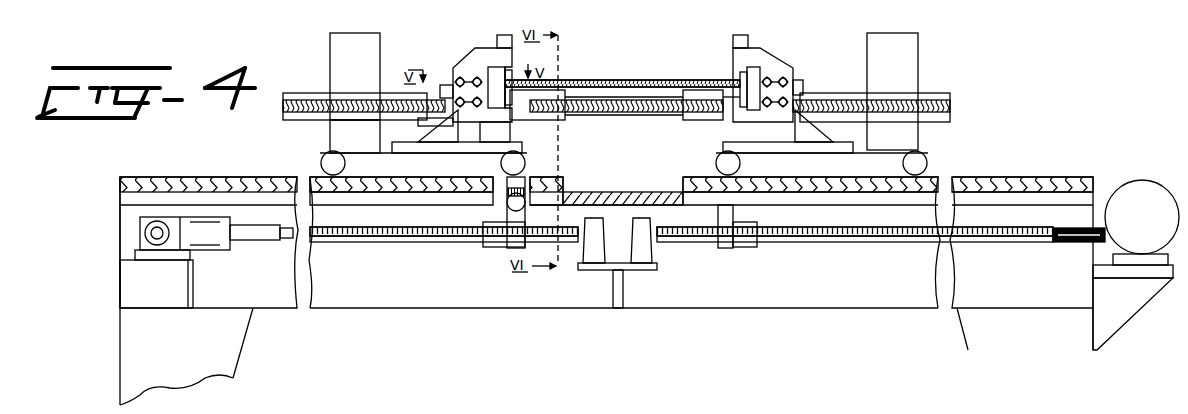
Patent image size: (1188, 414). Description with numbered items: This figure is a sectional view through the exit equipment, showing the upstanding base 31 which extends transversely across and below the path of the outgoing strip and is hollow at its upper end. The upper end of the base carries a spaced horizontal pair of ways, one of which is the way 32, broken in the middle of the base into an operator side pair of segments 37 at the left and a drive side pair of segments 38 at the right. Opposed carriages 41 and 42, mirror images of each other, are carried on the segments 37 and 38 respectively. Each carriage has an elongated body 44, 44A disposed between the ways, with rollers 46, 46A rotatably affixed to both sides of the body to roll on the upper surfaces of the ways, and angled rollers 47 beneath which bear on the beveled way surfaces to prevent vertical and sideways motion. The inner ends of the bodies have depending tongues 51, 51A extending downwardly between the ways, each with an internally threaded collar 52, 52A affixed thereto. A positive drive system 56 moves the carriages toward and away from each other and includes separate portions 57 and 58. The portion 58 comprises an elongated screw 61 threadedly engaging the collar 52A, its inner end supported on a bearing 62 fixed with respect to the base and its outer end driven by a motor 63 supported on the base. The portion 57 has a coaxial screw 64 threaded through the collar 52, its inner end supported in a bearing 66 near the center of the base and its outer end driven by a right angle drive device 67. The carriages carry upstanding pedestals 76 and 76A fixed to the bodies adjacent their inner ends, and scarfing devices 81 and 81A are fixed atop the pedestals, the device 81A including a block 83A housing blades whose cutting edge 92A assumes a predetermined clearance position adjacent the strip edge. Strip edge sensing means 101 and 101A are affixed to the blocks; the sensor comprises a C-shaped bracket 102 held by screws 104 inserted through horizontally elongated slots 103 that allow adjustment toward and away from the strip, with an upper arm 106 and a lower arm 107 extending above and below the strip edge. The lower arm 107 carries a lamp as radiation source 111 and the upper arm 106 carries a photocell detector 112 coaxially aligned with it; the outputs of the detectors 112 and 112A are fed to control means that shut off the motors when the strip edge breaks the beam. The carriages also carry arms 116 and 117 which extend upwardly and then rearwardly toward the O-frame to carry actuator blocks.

The base 31 is at (800, 298).
The way 32 is at (972, 180).
The operator side pair of segments 37 is at (158, 176).
The drive side pair of segments 38 is at (1022, 170).
The carriage 41 is at (322, 160).
The carriage 42 is at (938, 164).
The body 44 is at (364, 152).
The body 44A is at (876, 158).
The rollers 46 is at (320, 164).
The rollers 46A is at (718, 160).
The angled rollers 47 is at (506, 208).
The depending tongue 51 is at (510, 248).
The depending tongue 51A is at (726, 240).
The internally threaded collar 52 is at (496, 246).
The internally threaded collar 52A is at (752, 240).
The drive system 56 is at (677, 286).
The drive system portion 57 is at (386, 294).
The drive system portion 58 is at (848, 284).
The screw 61 is at (878, 242).
The bearing 62 is at (638, 256).
The motor 63 is at (1145, 180).
The screw 64 is at (404, 242).
The bearing 66 is at (596, 256).
The right angle drive device 67 is at (200, 252).
The pedestal 76 is at (428, 130).
The pedestal 76A is at (810, 130).
The scarfing device 81 is at (545, 108).
The scarfing device 81A is at (738, 74).
The block 83A is at (804, 82).
The cutting edge 92A is at (738, 110).
The strip edge sensing means 101 is at (486, 40).
The strip edge sensing means 101A is at (785, 44).
The C-shaped bracket 102 is at (472, 58).
The slots 103 is at (472, 105).
The screws 104 is at (455, 150).
The upper arm 106 is at (522, 64).
The lower arm 107 is at (498, 130).
The radiation source 111 is at (520, 114).
The radiation detector 112 is at (514, 72).
The radiation detector 112A is at (748, 64).
The arm 116 is at (348, 53).
The arm 117 is at (905, 52).